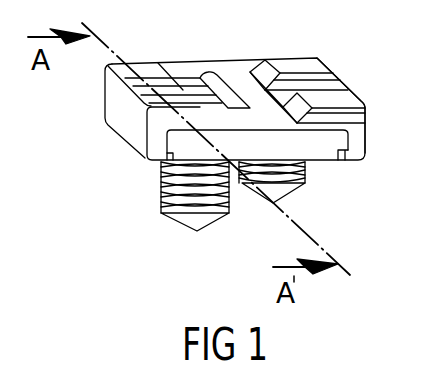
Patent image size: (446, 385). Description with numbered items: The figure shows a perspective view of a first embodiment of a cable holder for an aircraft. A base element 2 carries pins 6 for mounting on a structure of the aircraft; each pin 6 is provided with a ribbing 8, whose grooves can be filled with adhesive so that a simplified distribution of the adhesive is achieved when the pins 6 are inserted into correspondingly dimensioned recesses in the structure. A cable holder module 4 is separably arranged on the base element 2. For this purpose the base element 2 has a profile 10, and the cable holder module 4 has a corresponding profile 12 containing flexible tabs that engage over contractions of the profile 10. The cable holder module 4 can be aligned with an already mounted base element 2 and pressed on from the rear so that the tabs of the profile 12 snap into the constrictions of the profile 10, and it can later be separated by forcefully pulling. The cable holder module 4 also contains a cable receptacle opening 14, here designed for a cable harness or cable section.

The base element 2 is at (323, 148).
The cable holder module 4 is at (355, 116).
The pins 6 is at (198, 218).
The ribbing 8 is at (172, 198).
The profile 10 is at (346, 142).
The profile 12 is at (164, 146).
The cable receptacle opening 14 is at (217, 77).